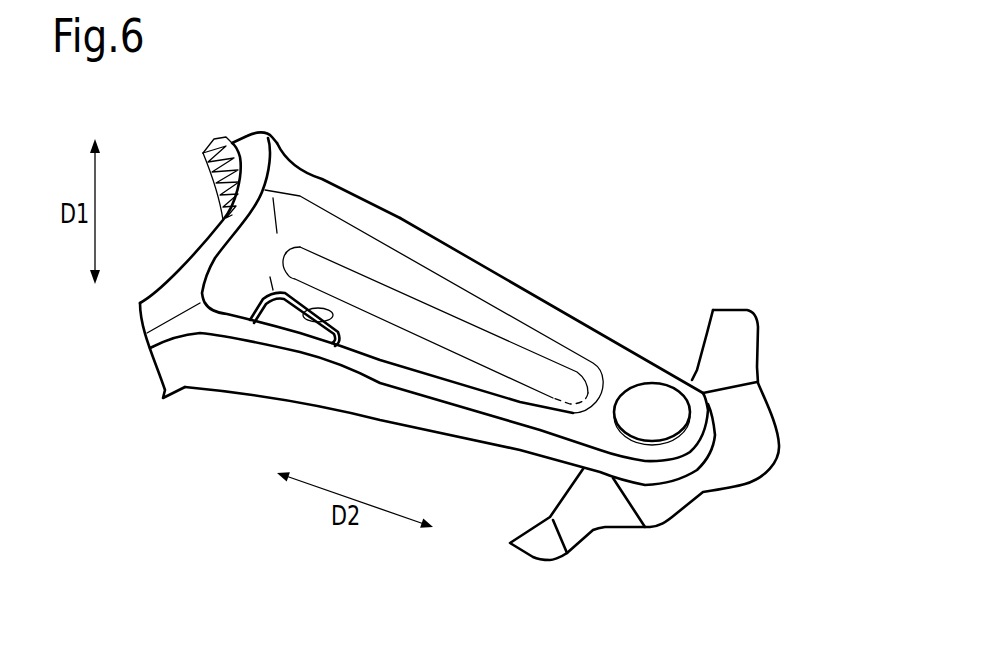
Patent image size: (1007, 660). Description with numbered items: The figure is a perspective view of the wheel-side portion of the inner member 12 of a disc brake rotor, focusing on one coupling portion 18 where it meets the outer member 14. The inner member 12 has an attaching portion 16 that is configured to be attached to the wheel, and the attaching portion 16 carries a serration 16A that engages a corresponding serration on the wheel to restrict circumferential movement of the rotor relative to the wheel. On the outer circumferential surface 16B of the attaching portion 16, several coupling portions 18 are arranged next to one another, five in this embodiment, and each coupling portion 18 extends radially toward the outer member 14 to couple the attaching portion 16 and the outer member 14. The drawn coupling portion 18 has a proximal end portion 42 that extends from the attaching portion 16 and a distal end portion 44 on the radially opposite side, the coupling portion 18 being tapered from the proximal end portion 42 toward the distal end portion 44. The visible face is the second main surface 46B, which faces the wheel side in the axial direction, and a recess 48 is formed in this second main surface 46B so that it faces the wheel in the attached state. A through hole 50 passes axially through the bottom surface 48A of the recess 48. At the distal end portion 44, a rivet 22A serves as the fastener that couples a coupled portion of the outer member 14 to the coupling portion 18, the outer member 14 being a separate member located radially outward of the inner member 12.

The inner member 12 is at (624, 210).
The outer member 14 is at (759, 345).
The attaching portion 16 is at (289, 146).
The serration 16A is at (230, 190).
The outer circumferential surface 16B is at (176, 375).
The coupling portion 18 is at (447, 245).
The rivet 22A is at (645, 383).
The proximal end portion 42 is at (322, 180).
The distal end portion 44 is at (628, 350).
The second main surface 46B is at (507, 293).
The recess 48 is at (370, 243).
The bottom surface 48A is at (412, 354).
The through hole 50 is at (333, 316).